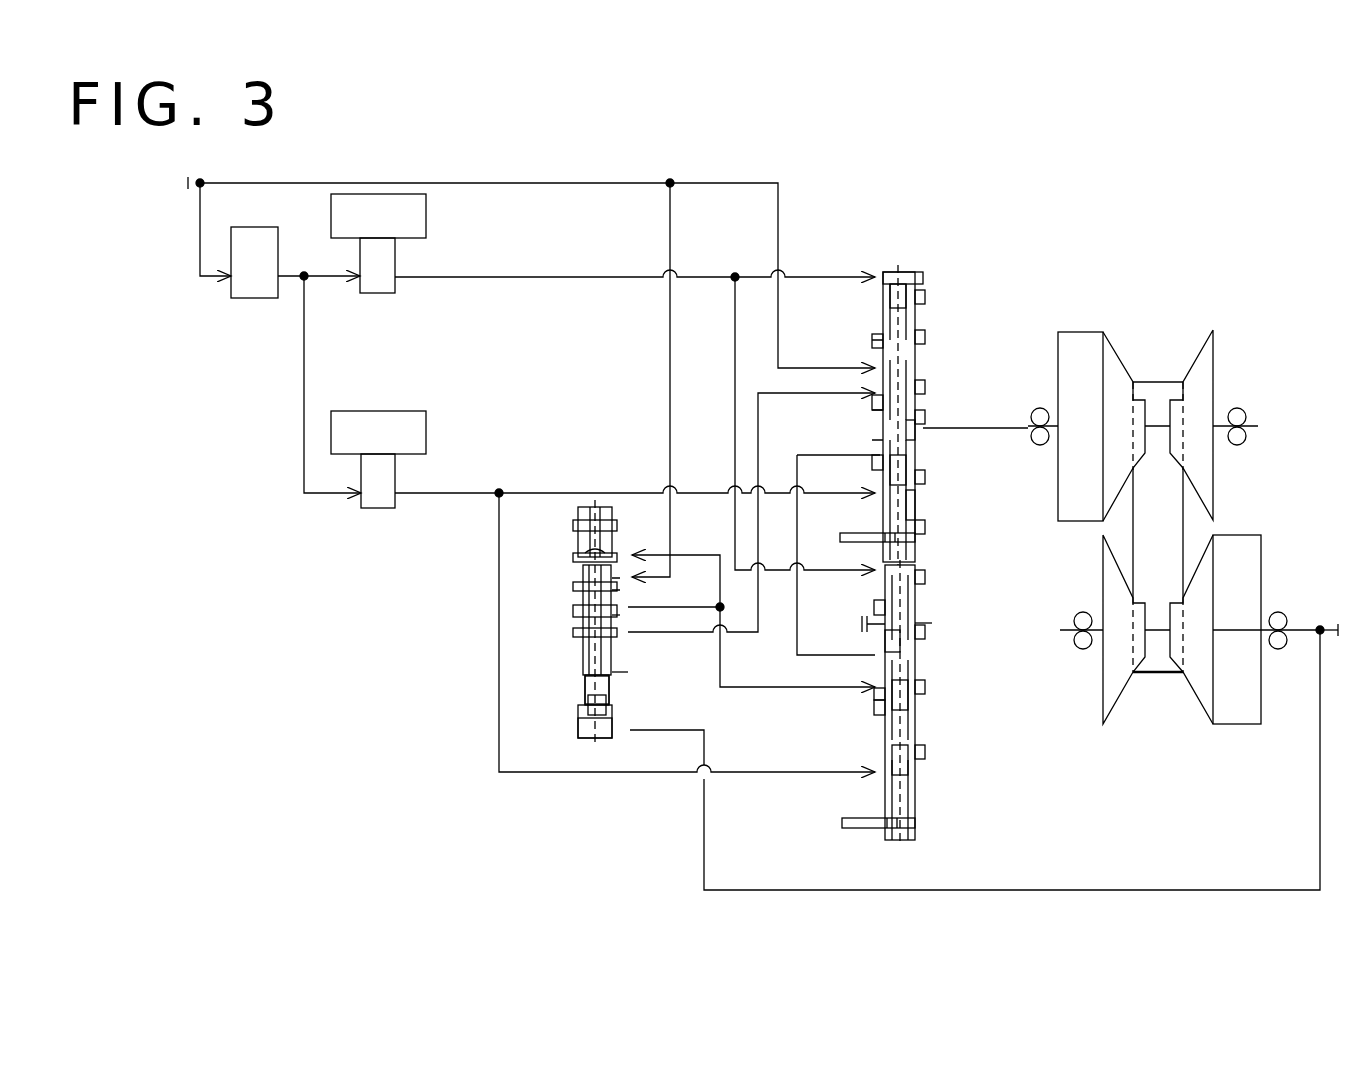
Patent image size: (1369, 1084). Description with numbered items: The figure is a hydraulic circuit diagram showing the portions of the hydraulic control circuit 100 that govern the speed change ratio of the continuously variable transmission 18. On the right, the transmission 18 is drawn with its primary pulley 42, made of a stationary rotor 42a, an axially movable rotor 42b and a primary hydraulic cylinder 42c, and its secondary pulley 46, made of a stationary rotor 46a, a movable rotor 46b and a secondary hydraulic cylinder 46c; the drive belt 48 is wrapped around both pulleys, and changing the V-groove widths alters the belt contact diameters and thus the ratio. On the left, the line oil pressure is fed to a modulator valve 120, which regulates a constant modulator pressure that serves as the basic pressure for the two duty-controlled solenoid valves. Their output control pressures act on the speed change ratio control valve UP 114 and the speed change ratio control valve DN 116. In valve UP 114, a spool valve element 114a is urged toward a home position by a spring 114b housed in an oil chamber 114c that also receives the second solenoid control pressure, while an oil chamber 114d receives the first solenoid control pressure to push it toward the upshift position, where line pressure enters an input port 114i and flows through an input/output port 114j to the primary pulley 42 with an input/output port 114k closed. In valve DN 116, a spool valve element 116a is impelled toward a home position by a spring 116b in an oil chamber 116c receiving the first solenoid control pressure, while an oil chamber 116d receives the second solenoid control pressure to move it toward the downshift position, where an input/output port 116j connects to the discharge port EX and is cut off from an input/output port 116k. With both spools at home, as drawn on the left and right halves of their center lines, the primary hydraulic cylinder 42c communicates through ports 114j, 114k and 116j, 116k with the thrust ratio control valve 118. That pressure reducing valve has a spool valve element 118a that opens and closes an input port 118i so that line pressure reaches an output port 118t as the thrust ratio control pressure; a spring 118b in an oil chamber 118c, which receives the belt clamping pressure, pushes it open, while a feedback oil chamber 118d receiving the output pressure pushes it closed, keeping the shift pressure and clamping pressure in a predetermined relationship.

The hydraulic control circuit 100 is at (920, 158).
The modulator valve 120 is at (250, 236).
The thrust ratio control valve 118 is at (583, 488).
The spool valve element 118a is at (585, 688).
The spring 118b is at (612, 712).
The oil chamber 118c is at (604, 738).
The feedback oil chamber 118d is at (575, 556).
The input port 118i is at (622, 582).
The output port 118t is at (620, 616).
The speed change ratio control valve UP 114 is at (930, 340).
The spool valve element 114a is at (906, 470).
The spring 114b is at (883, 338).
The oil chamber 114c is at (884, 290).
The oil chamber 114d is at (920, 496).
The input port 114i is at (882, 400).
The input/output port 114j is at (918, 432).
The input/output port 114k is at (884, 458).
The speed change ratio control valve DN 116 is at (940, 600).
The spool valve element 116a is at (908, 695).
The spring 116b is at (908, 758).
The oil chamber 116c is at (886, 788).
The oil chamber 116d is at (850, 566).
The input/output port 116j is at (870, 650).
The input/output port 116k is at (882, 692).
The continuously variable transmission 18 is at (1125, 775).
The primary pulley 42 is at (1092, 542).
The stationary rotor 42a is at (1196, 360).
The movable rotor 42b is at (1112, 365).
The primary hydraulic cylinder 42c is at (1068, 350).
The secondary pulley 46 is at (1100, 732).
The stationary rotor 46a is at (1118, 674).
The movable rotor 46b is at (1208, 680).
The secondary hydraulic cylinder 46c is at (1250, 560).
The drive belt 48 is at (1156, 388).